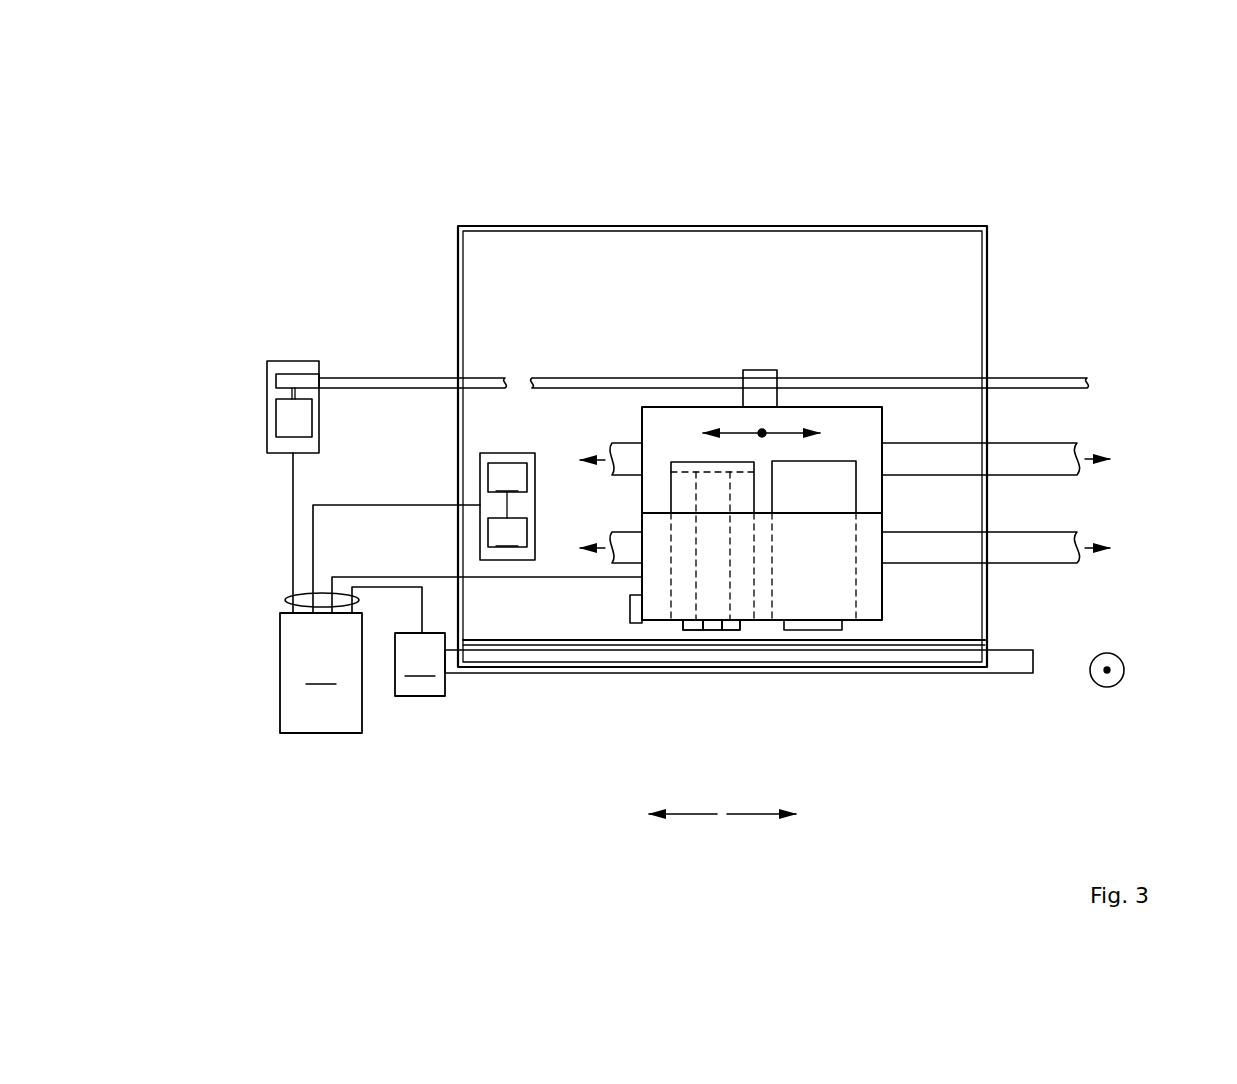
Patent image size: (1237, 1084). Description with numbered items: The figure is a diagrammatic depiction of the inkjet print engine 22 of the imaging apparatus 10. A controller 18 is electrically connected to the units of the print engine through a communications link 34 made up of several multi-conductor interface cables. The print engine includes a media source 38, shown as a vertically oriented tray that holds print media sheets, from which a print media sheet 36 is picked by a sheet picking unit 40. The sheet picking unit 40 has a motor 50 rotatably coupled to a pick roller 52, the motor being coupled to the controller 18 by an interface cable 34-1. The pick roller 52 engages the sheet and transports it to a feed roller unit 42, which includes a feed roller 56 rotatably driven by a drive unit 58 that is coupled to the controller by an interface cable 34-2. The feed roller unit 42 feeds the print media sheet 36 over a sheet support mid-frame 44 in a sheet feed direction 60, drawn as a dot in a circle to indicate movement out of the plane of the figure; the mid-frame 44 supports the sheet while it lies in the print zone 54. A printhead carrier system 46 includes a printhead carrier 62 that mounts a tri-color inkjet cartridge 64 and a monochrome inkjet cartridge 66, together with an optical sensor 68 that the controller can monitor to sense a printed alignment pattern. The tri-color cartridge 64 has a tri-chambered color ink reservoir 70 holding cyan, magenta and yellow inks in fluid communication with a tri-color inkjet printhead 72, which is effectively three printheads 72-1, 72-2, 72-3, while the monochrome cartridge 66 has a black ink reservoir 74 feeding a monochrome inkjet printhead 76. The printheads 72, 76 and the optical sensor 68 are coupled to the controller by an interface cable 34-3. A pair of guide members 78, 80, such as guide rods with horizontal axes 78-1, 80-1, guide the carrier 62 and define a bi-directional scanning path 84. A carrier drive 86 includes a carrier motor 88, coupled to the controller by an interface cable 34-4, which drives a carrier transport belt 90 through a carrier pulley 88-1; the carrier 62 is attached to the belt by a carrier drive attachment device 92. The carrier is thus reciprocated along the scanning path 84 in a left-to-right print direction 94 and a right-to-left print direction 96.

The imaging apparatus 10 is at (355, 232).
The inkjet print engine 22 is at (847, 200).
The media source 38 is at (498, 225).
The carrier transport belt 90 is at (378, 377).
The carrier drive 86 is at (267, 397).
The carrier motor 88 is at (276, 425).
The carrier pulley 88-1 is at (292, 374).
The communications link 34 is at (285, 600).
The interface cable 34-1 is at (375, 505).
The interface cable 34-2 is at (382, 588).
The interface cable 34-3 is at (375, 577).
The interface cable 34-4 is at (292, 540).
The controller 18 is at (321, 673).
The drive unit 58 is at (420, 664).
The sheet picking unit 40 is at (500, 452).
The motor 50 is at (507, 477).
The pick roller 52 is at (507, 532).
The printhead carrier system 46 is at (817, 332).
The carrier drive attachment device 92 is at (755, 370).
The bi-directional scanning path 84 is at (762, 433).
The tri-chambered color ink reservoir 70 is at (681, 462).
The monochrome ink reservoir 74 is at (835, 461).
The printhead carrier 62 is at (883, 496).
The tri-color inkjet cartridge 64 is at (665, 583).
The monochrome inkjet cartridge 66 is at (860, 588).
The optical sensor 68 is at (630, 605).
The tri-color inkjet printhead 72 is at (682, 624).
The inkjet printhead 72-1 is at (687, 631).
The inkjet printhead 72-2 is at (711, 631).
The inkjet printhead 72-3 is at (731, 631).
The monochrome inkjet printhead 76 is at (842, 623).
The guide member 78 is at (1022, 443).
The horizontal axis 78-1 is at (603, 460).
The guide member 80 is at (1023, 532).
The horizontal axis 80-1 is at (603, 548).
The print media sheet 36 is at (974, 640).
The sheet support mid-frame 44 is at (973, 650).
The sheet feed direction 60 is at (1124, 663).
The print zone 54 is at (473, 690).
The feed roller 56 is at (548, 675).
The feed roller unit 42 is at (482, 748).
The left-to-right print direction 94 is at (753, 814).
The right-to-left print direction 96 is at (690, 814).